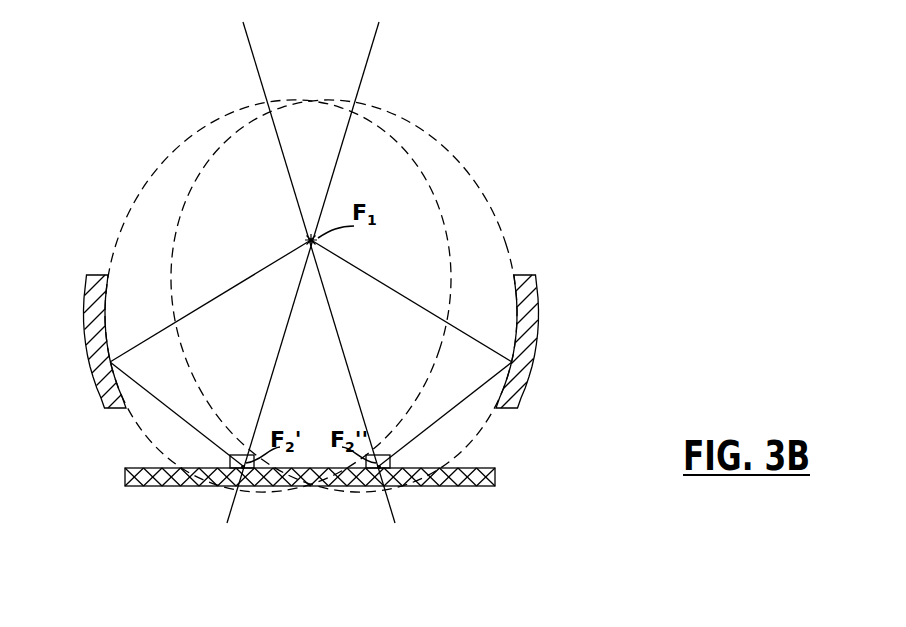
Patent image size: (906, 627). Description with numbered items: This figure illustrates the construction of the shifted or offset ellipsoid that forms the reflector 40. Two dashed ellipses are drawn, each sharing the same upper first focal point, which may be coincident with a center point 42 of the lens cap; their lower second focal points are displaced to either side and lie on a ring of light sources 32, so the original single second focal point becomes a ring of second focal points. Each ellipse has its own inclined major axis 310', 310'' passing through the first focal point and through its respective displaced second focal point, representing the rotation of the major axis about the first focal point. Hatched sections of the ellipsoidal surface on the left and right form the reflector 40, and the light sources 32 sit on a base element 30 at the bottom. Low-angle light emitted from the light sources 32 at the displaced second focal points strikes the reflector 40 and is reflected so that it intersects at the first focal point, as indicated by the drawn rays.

The substrate 30 is at (487, 486).
The light source 32 is at (243, 440).
The reflector 40 is at (95, 318).
The center point 42 is at (311, 238).
The major axis 310' is at (264, 278).
The major axis 310'' is at (360, 278).